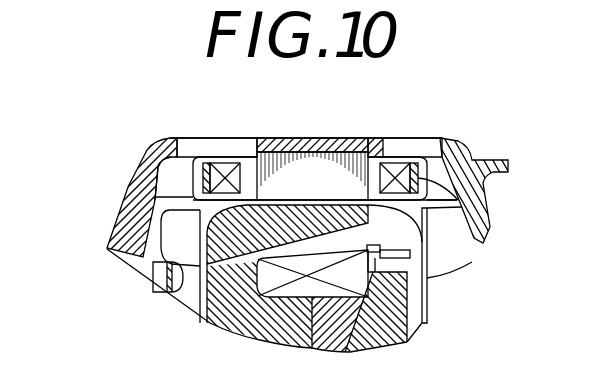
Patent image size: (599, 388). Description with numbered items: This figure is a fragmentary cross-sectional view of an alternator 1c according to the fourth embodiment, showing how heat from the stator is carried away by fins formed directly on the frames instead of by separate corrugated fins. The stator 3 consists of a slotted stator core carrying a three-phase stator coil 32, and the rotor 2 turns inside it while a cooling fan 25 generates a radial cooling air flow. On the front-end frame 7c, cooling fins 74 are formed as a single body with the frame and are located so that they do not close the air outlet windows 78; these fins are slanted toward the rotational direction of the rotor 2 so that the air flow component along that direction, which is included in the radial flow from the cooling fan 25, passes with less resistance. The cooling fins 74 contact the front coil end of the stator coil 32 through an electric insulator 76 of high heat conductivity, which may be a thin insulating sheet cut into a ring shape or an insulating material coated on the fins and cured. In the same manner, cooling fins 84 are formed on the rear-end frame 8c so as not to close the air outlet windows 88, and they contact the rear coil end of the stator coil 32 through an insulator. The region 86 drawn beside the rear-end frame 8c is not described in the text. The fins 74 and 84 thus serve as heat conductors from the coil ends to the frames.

The alternator 1c is at (446, 124).
The rotor 2 is at (413, 350).
The stator 3 is at (305, 139).
The front-end frame 7c is at (127, 218).
The rear-end frame 8c is at (463, 150).
The cooling fan 25 is at (172, 240).
The stator coil 32 is at (222, 170).
The cooling fins 74 is at (175, 192).
The insulator 76 is at (152, 162).
The air outlet windows 78 is at (198, 145).
The cooling fins 84 is at (442, 177).
The chamber 86 is at (470, 261).
The air outlet windows 88 is at (402, 140).